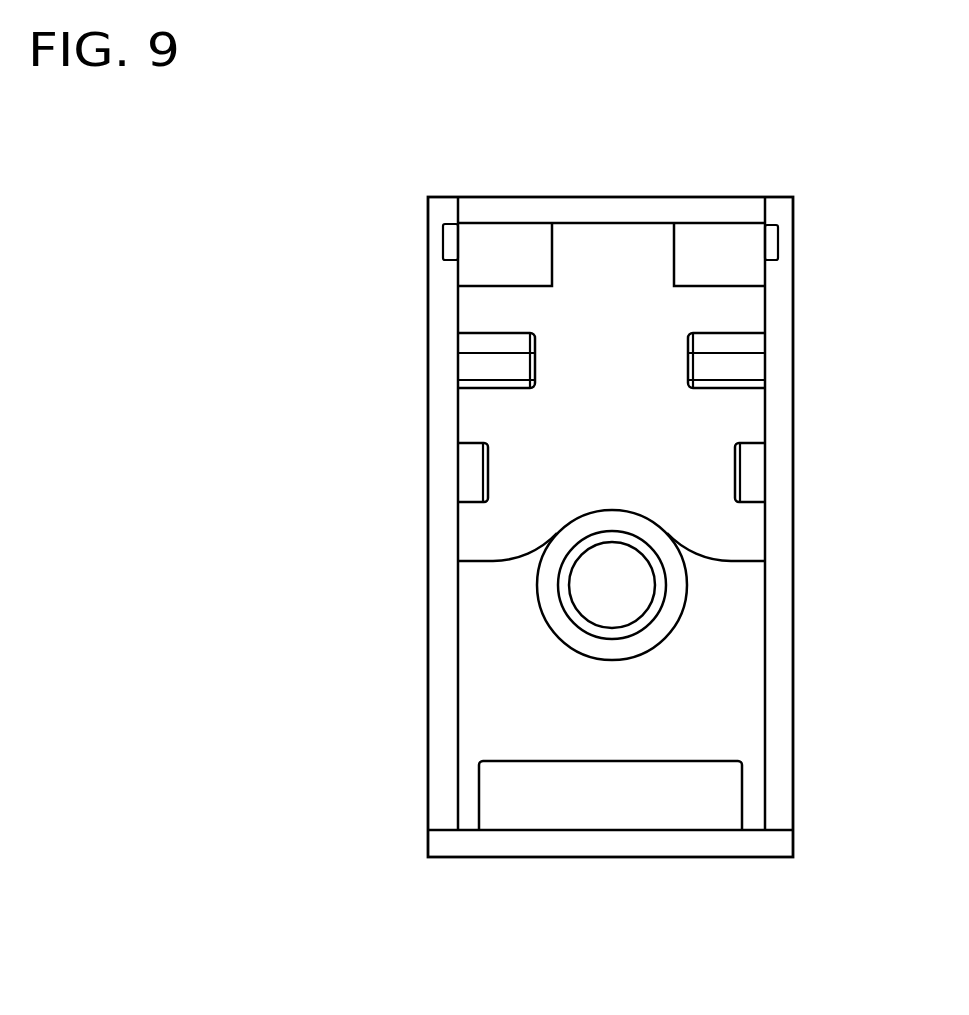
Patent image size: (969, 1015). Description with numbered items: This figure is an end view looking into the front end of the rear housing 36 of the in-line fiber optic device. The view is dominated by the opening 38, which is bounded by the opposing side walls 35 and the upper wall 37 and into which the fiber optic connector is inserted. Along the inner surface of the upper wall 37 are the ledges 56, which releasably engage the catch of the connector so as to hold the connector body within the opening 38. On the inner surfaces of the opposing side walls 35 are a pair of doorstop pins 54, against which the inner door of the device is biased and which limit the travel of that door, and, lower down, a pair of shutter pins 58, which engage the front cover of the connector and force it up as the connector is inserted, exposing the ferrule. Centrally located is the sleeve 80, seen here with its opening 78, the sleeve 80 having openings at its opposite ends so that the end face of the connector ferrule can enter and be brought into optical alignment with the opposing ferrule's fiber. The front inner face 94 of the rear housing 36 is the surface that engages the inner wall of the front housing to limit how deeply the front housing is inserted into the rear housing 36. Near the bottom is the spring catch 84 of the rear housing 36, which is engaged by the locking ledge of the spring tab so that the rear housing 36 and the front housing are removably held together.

The side wall 35 is at (426, 723).
The rear housing 36 is at (340, 452).
The upper wall 37 is at (595, 197).
The opening 38 is at (628, 388).
The doorstop pins 54 is at (480, 363).
The ledges 56 is at (697, 262).
The shutter pins 58 is at (748, 483).
The opening of sleeve 78 is at (633, 605).
The sleeve 80 is at (550, 607).
The spring catch 84 is at (547, 830).
The front inner face 94 is at (628, 726).